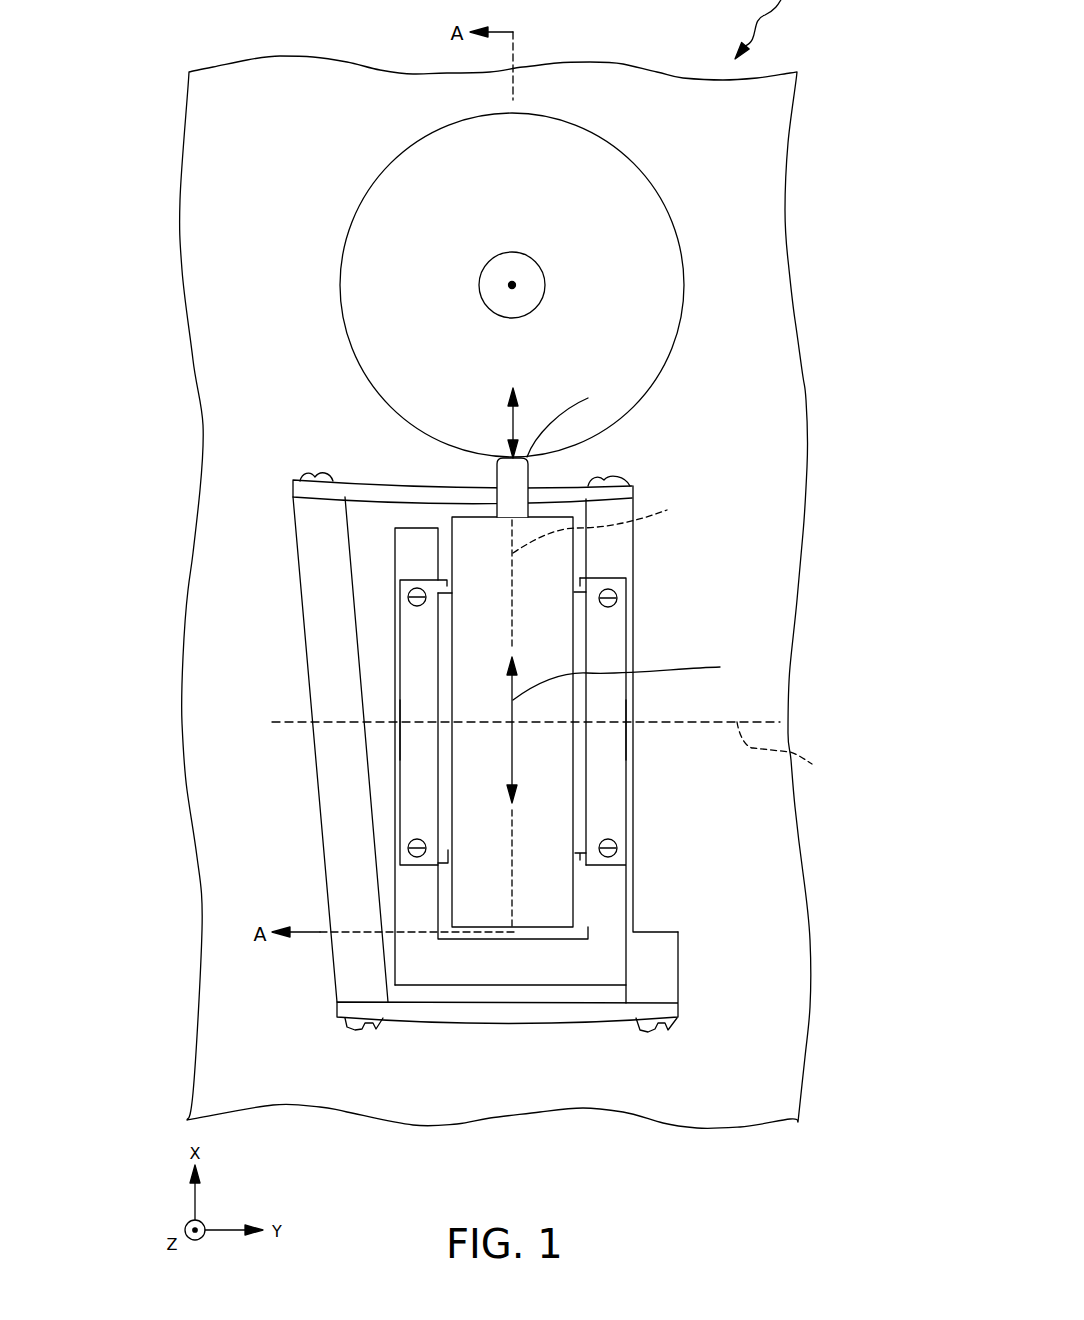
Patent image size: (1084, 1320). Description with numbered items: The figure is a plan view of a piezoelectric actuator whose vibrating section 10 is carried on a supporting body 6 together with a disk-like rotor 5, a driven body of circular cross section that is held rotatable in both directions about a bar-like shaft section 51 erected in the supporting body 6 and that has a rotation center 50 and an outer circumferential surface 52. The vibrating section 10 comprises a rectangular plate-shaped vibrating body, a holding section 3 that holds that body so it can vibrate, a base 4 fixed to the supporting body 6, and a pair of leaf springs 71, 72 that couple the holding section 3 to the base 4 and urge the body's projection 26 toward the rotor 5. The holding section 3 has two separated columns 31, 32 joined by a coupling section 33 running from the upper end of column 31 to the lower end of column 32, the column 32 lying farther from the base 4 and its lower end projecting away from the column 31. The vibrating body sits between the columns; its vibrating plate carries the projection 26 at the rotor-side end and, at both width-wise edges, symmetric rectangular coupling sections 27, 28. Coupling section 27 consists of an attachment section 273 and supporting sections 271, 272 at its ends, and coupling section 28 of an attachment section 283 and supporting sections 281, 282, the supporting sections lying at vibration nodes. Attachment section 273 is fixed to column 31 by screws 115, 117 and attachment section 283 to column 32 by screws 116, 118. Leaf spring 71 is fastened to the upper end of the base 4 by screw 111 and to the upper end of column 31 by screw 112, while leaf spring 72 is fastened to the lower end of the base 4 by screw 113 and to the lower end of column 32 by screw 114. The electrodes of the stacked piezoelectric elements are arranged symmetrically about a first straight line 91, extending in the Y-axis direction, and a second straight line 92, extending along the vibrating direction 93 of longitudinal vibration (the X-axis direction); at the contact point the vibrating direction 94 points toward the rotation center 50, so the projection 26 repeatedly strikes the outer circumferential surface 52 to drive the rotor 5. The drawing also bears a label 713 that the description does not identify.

The holding section 3 is at (633, 657).
The base 4 is at (320, 617).
The rotor 5 is at (501, 285).
The supporting body 6 is at (762, 184).
The vibrating section 10 is at (278, 676).
The projection 26 is at (495, 472).
The coupling section 27 is at (415, 703).
The coupling section 28 is at (607, 742).
The column 31 is at (413, 883).
The column 32 is at (633, 708).
The coupling section 33 is at (493, 962).
The rotation center 50 is at (512, 285).
The shaft section 51 is at (503, 263).
The outer circumferential surface 52 is at (367, 188).
The leaf spring 71 is at (390, 490).
The leaf spring 72 is at (542, 1017).
The first straight line 91 is at (786, 752).
The second straight line 92 is at (605, 693).
The vibrating direction of longitudinal vibration 93 is at (626, 728).
The vibrating direction at contact portion 94 is at (510, 423).
The screw 111 is at (303, 476).
The screw 112 is at (615, 478).
The screw 113 is at (353, 1022).
The screw 114 is at (643, 1027).
The screw 115 is at (410, 607).
The screw 116 is at (620, 592).
The screw 117 is at (407, 845).
The screw 118 is at (618, 840).
The supporting section 271 is at (442, 583).
The supporting section 272 is at (443, 860).
The attachment section 273 is at (417, 772).
The supporting section 281 is at (580, 583).
The supporting section 282 is at (580, 858).
The attachment section 283 is at (607, 777).
The contact surface 713 is at (588, 398).